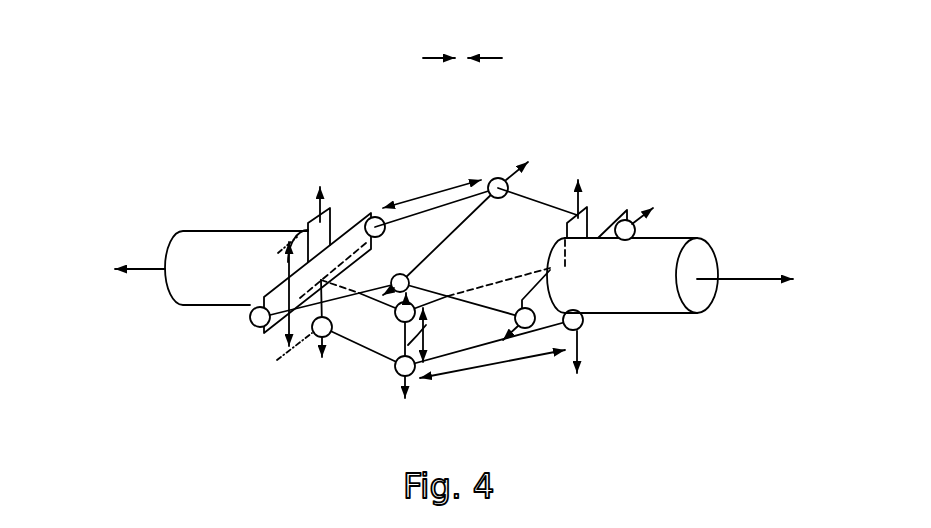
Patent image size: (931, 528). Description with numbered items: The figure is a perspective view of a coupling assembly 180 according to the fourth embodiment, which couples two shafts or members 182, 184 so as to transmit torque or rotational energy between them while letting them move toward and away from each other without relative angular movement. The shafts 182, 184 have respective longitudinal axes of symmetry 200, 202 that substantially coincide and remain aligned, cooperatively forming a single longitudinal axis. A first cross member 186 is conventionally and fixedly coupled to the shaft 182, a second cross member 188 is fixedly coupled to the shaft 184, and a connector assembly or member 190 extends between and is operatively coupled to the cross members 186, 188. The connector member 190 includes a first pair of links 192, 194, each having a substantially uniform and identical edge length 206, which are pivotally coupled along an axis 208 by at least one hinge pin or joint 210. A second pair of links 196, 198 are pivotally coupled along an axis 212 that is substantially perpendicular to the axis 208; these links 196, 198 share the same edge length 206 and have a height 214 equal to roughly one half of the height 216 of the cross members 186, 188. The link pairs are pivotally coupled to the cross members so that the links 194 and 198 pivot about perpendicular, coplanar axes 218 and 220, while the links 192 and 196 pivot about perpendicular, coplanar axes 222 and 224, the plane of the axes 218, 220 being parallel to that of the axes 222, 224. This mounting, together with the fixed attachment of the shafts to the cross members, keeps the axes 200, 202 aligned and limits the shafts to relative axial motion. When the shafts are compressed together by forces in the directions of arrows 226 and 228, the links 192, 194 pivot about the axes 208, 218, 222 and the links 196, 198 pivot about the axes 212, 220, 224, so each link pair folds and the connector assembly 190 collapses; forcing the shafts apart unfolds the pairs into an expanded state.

The coupling assembly 180 is at (224, 151).
The shaft 182 is at (198, 234).
The shaft 184 is at (689, 241).
The first cross member 186 is at (337, 208).
The second cross member 188 is at (590, 212).
The connector assembly 190 is at (346, 296).
The link 192 is at (409, 268).
The link 194 is at (534, 249).
The link 196 is at (392, 331).
The link 198 is at (477, 341).
The longitudinal axis of symmetry 200 is at (142, 268).
The longitudinal axis of symmetry 202 is at (751, 279).
The edge length 206 is at (437, 185).
The axis 208 is at (512, 160).
The hinge pin 210 is at (491, 178).
The axis 212 is at (412, 386).
The height 214 is at (393, 358).
The height 216 is at (280, 326).
The axis 218 is at (636, 205).
The axis 220 is at (588, 207).
The axis 222 is at (240, 334).
The axis 224 is at (315, 210).
The arrow 226 is at (436, 56).
The arrow 228 is at (490, 56).